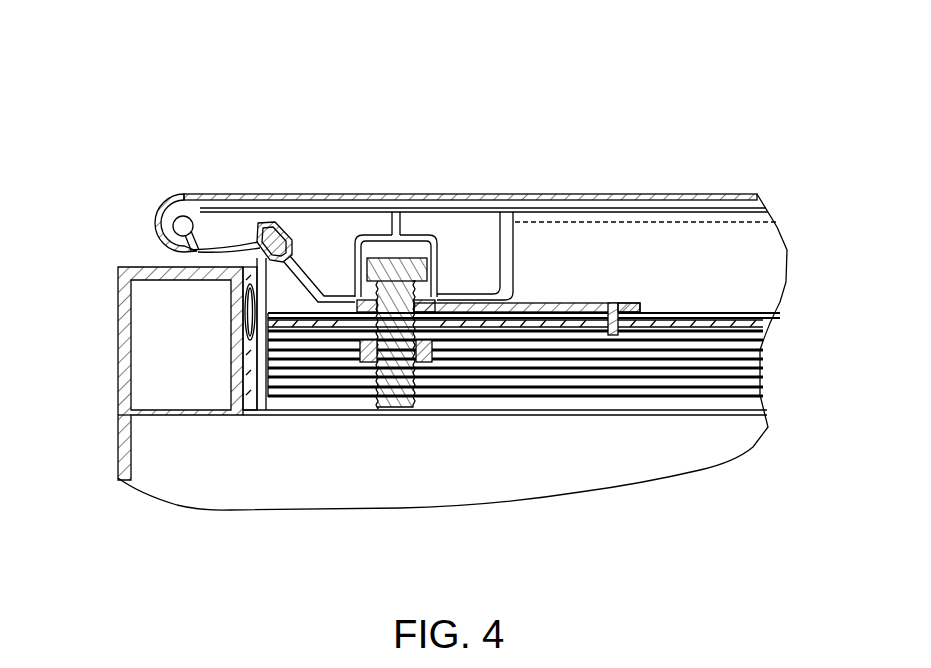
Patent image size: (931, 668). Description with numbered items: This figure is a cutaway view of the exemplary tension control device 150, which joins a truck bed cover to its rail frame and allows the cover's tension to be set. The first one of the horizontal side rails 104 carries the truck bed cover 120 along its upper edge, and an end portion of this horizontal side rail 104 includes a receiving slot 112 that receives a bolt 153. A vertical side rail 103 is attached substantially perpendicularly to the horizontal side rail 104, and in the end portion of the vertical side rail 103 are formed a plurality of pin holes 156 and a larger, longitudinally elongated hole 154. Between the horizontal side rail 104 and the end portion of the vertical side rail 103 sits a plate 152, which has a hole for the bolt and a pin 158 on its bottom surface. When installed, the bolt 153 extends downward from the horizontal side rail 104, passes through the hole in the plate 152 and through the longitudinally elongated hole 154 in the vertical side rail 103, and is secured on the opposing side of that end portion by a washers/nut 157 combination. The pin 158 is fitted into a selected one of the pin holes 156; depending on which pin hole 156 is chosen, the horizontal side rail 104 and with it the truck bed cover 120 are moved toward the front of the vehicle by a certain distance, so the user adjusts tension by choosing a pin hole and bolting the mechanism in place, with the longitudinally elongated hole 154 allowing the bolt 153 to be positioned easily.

The tension control device 150 is at (200, 73).
The vertical side rail 103 is at (742, 257).
The horizontal side rail 104 is at (317, 207).
The receiving slot 112 is at (378, 252).
The truck bed cover 120 is at (585, 194).
The plate 152 is at (568, 301).
The bolt 153 is at (405, 258).
The longitudinally elongated hole 154 is at (352, 322).
The pin holes 156 is at (620, 325).
The washers/nut combination 157 is at (422, 343).
The pin 158 is at (608, 302).